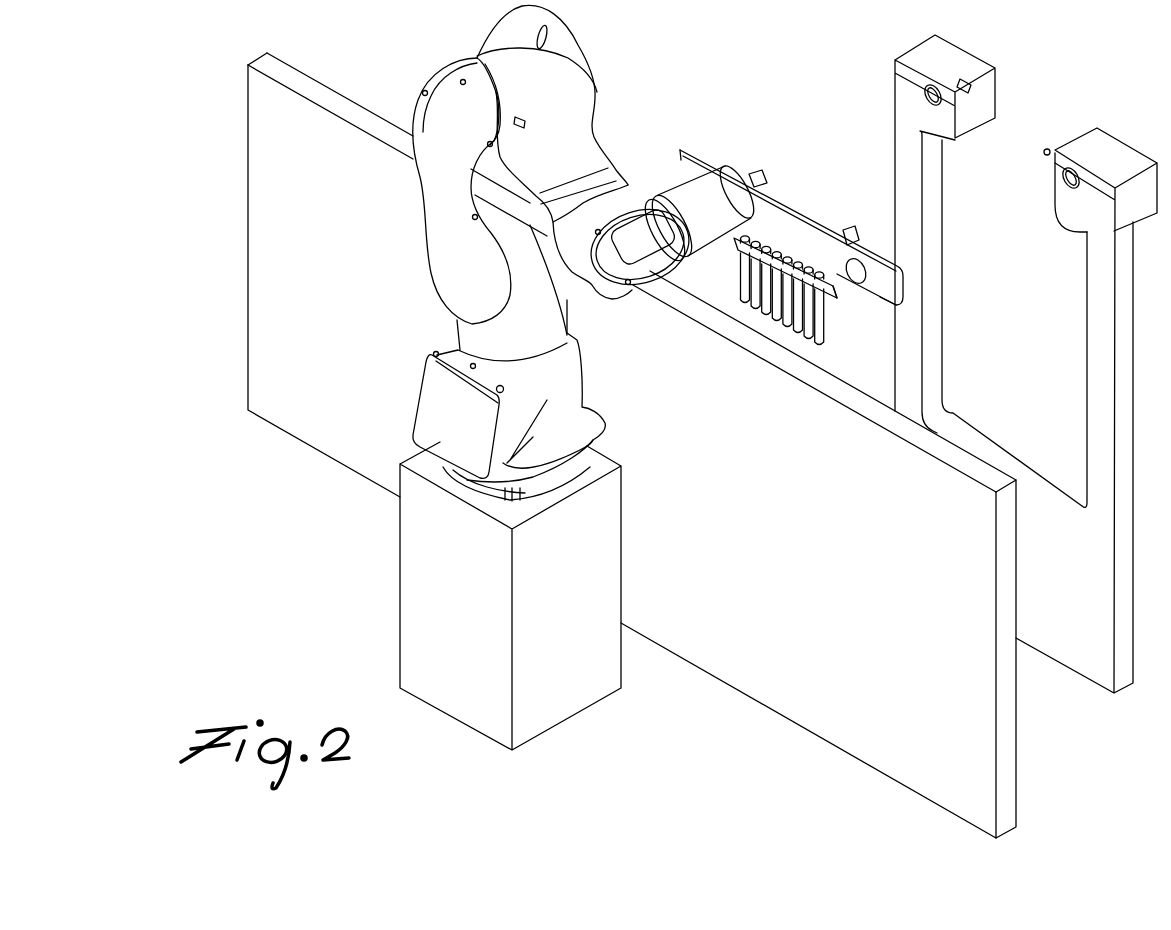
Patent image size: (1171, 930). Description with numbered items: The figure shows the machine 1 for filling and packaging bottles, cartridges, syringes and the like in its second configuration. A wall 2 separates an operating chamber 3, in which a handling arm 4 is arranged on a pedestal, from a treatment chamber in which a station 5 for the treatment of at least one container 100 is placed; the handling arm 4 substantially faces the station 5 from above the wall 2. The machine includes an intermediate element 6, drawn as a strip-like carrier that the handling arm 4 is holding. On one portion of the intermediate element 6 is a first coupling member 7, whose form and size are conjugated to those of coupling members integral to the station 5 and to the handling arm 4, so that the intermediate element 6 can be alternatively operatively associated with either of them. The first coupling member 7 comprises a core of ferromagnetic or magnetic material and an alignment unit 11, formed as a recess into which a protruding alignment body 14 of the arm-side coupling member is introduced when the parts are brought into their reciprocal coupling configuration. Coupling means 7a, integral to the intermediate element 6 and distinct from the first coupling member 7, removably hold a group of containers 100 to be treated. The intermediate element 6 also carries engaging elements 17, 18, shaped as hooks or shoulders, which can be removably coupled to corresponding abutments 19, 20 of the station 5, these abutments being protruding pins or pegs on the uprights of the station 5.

The machine 1 is at (785, 121).
The wall 2 is at (1000, 790).
The operating chamber 3 is at (543, 253).
The handling arm 4 is at (476, 58).
The station 5 is at (1026, 364).
The intermediate element 6 is at (818, 236).
The first coupling member 7 is at (859, 268).
The coupling means 7a is at (836, 298).
The alignment unit 11 is at (893, 290).
The alignment body 14 is at (706, 166).
The engaging element 17 is at (792, 159).
The engaging element 18 is at (757, 172).
The abutment 19 is at (1001, 162).
The abutment 20 is at (970, 90).
The container 100 is at (765, 305).